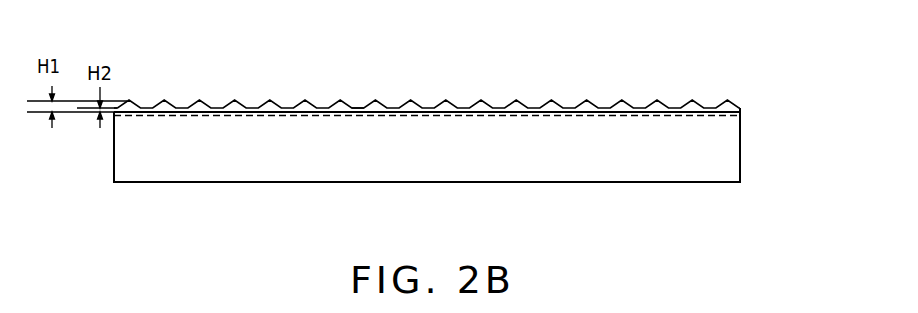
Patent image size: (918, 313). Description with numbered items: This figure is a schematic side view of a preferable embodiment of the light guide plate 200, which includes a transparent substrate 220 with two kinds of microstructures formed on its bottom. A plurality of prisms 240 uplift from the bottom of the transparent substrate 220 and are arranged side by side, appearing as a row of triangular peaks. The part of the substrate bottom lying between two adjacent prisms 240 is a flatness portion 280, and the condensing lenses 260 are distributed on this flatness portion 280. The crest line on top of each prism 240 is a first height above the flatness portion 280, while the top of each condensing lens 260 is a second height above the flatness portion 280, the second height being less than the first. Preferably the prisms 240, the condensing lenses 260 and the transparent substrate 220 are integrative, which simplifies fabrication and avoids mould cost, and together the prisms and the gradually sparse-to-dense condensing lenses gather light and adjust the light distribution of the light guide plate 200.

The light guide plate 200 is at (725, 70).
The transparent substrate 220 is at (725, 142).
The prisms 240 is at (341, 101).
The condensing lenses 260 is at (358, 108).
The flatness portion 280 is at (355, 112).